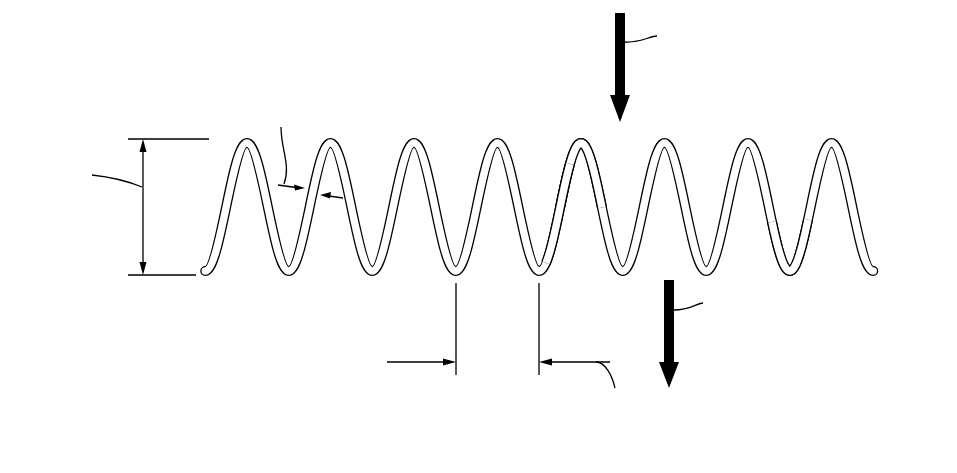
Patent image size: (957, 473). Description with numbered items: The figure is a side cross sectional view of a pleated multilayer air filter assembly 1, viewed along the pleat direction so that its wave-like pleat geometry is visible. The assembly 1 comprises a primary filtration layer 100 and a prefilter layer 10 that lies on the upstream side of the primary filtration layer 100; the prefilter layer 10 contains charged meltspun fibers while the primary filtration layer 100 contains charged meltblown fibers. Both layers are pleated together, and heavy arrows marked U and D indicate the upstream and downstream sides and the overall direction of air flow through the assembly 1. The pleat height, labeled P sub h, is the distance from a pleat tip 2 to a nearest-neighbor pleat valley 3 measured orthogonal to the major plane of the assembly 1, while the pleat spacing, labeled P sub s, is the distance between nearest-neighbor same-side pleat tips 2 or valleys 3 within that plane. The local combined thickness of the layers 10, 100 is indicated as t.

The pleated multilayer air filter assembly 1 is at (180, 38).
The pleat tip 2 is at (331, 138).
The prefilter layer 10 is at (562, 183).
The primary filtration layer 100 is at (557, 222).
The pleat valley 3 is at (790, 276).